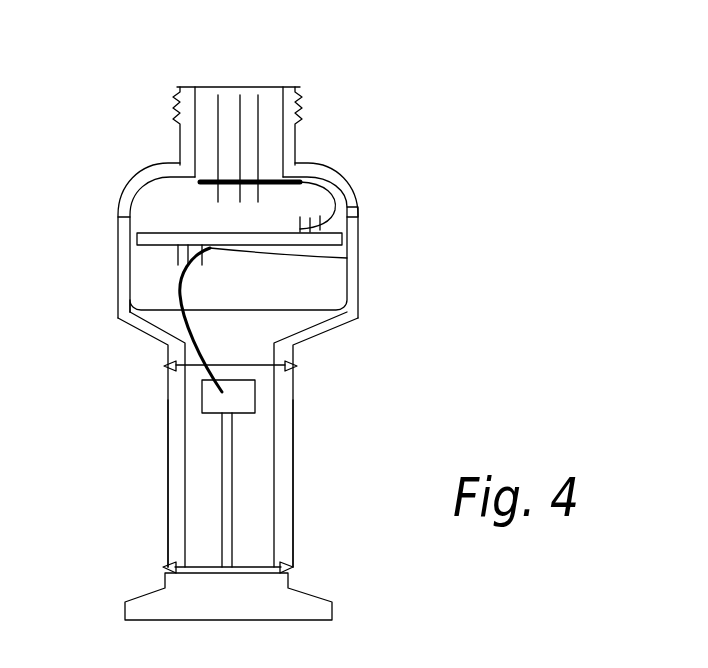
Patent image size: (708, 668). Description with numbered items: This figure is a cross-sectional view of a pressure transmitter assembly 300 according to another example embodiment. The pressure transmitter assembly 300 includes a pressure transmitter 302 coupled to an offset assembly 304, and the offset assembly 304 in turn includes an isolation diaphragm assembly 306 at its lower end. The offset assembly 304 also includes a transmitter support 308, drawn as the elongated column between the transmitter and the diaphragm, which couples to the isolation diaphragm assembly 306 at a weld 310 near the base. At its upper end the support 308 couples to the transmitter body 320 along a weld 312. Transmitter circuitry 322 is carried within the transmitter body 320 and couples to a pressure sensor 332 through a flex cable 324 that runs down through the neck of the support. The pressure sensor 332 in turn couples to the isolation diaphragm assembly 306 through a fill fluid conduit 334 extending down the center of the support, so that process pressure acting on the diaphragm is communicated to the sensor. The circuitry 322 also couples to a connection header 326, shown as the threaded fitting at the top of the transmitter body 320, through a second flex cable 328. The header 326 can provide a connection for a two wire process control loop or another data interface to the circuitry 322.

The pressure transmitter assembly 300 is at (448, 188).
The pressure transmitter 302 is at (350, 156).
The offset assembly 304 is at (318, 461).
The isolation diaphragm assembly 306 is at (310, 590).
The transmitter support 308 is at (177, 458).
The weld 310 is at (163, 568).
The weld 312 is at (297, 366).
The transmitter body 320 is at (118, 270).
The transmitter circuitry 322 is at (333, 258).
The flex cable 324 is at (172, 283).
The connection header 326 is at (268, 123).
The flex cable 328 is at (360, 210).
The pressure sensor 332 is at (207, 400).
The fill fluid conduit 334 is at (222, 497).